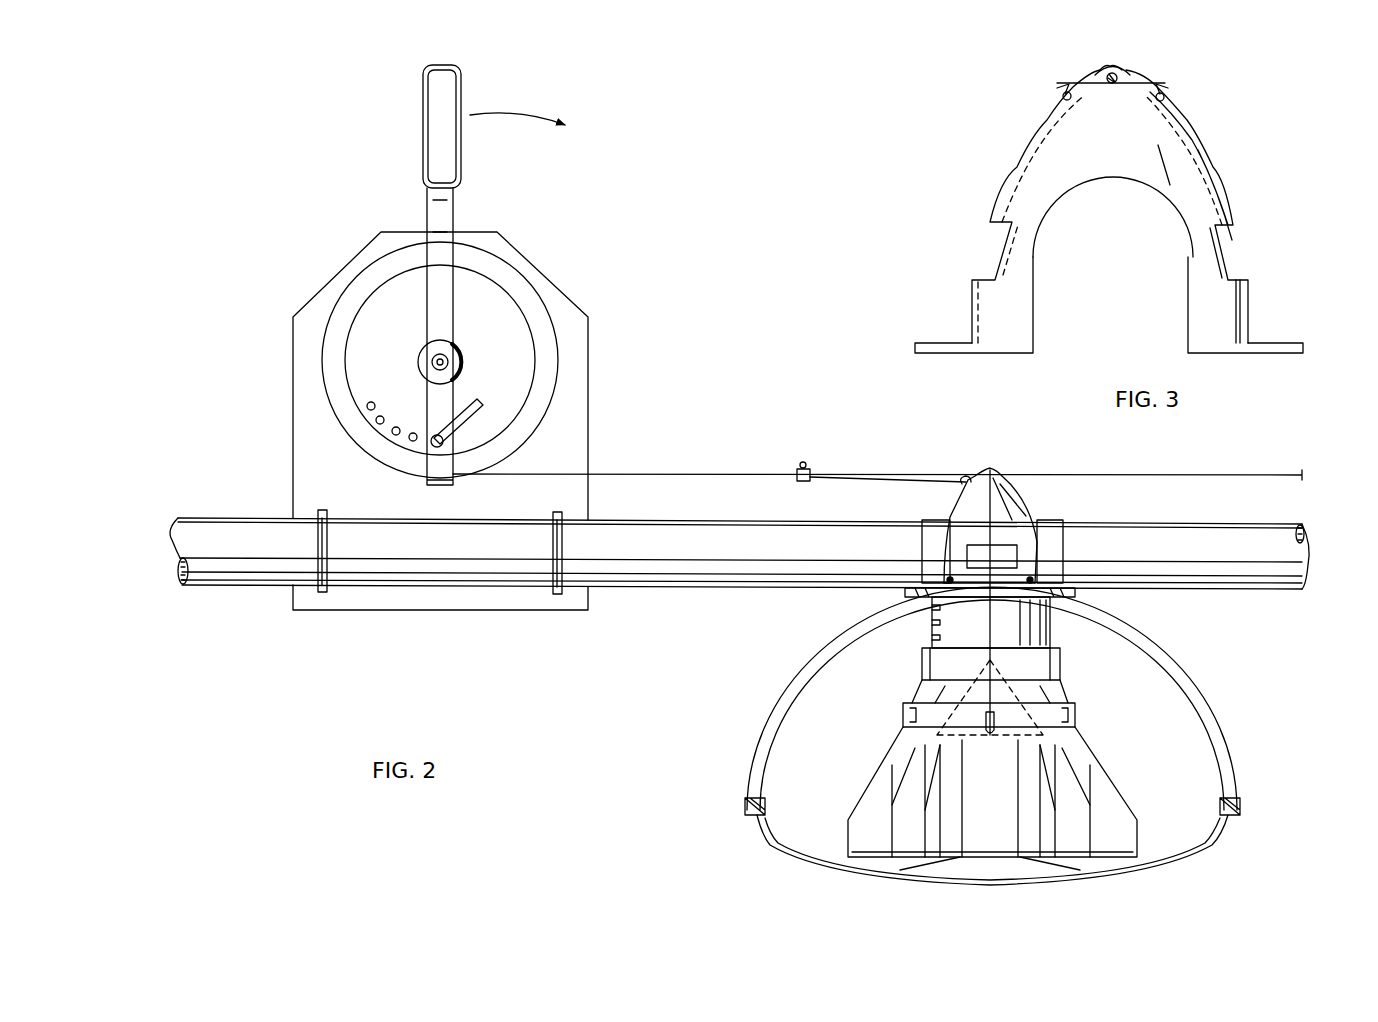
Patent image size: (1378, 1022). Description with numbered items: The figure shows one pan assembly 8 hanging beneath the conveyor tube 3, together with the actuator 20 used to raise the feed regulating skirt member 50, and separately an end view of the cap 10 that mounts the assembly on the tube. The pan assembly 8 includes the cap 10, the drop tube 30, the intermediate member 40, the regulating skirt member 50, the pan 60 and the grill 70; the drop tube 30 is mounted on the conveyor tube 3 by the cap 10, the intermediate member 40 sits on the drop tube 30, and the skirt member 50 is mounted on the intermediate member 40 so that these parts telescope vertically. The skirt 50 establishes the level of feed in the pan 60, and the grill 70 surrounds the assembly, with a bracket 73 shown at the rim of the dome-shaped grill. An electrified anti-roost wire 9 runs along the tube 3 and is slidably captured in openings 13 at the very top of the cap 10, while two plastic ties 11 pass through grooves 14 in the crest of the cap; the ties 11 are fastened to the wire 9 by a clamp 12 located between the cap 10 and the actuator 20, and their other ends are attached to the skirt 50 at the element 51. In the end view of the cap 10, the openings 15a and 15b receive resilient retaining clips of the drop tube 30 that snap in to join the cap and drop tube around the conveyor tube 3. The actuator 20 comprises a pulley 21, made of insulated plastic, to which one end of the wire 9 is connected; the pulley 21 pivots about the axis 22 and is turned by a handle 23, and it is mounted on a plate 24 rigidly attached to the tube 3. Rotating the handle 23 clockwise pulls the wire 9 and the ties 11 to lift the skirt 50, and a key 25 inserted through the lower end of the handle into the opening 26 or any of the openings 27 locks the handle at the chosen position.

In FIG. 2, the conveyor tube 3 is at (430, 565).
In FIG. 2, the pan assembly 8 is at (970, 663).
In FIG. 2, the anti-roost wire 9 is at (705, 470).
In FIG. 2, the cap 10 is at (1020, 498).
In FIG. 2, the ties 11 is at (890, 485).
In FIG. 3, the ties 11 is at (1062, 96).
In FIG. 2, the clamp 12 is at (805, 464).
In FIG. 2, the openings 13 is at (1000, 476).
In FIG. 3, the openings 13 is at (1118, 84).
In FIG. 2, the grooves 14 is at (985, 470).
In FIG. 3, the grooves 14 is at (1122, 70).
In FIG. 3, the opening 15a is at (990, 250).
In FIG. 3, the opening 15b is at (1233, 255).
In FIG. 2, the actuator 20 is at (512, 335).
In FIG. 2, the pulley 21 is at (480, 290).
In FIG. 2, the axis 22 is at (447, 360).
In FIG. 2, the handle 23 is at (448, 95).
In FIG. 2, the plate 24 is at (572, 383).
In FIG. 2, the key 25 is at (468, 397).
In FIG. 2, the opening 26 is at (371, 401).
In FIG. 2, the openings 27 is at (411, 433).
In FIG. 2, the drop tube 30 is at (1042, 612).
In FIG. 2, the intermediate member 40 is at (958, 665).
In FIG. 2, the regulating skirt member 50 is at (1062, 740).
In FIG. 2, the element 51 is at (996, 716).
In FIG. 2, the pan 60 is at (1205, 856).
In FIG. 2, the grill 70 is at (1232, 735).
In FIG. 2, the bracket 73 is at (1207, 700).